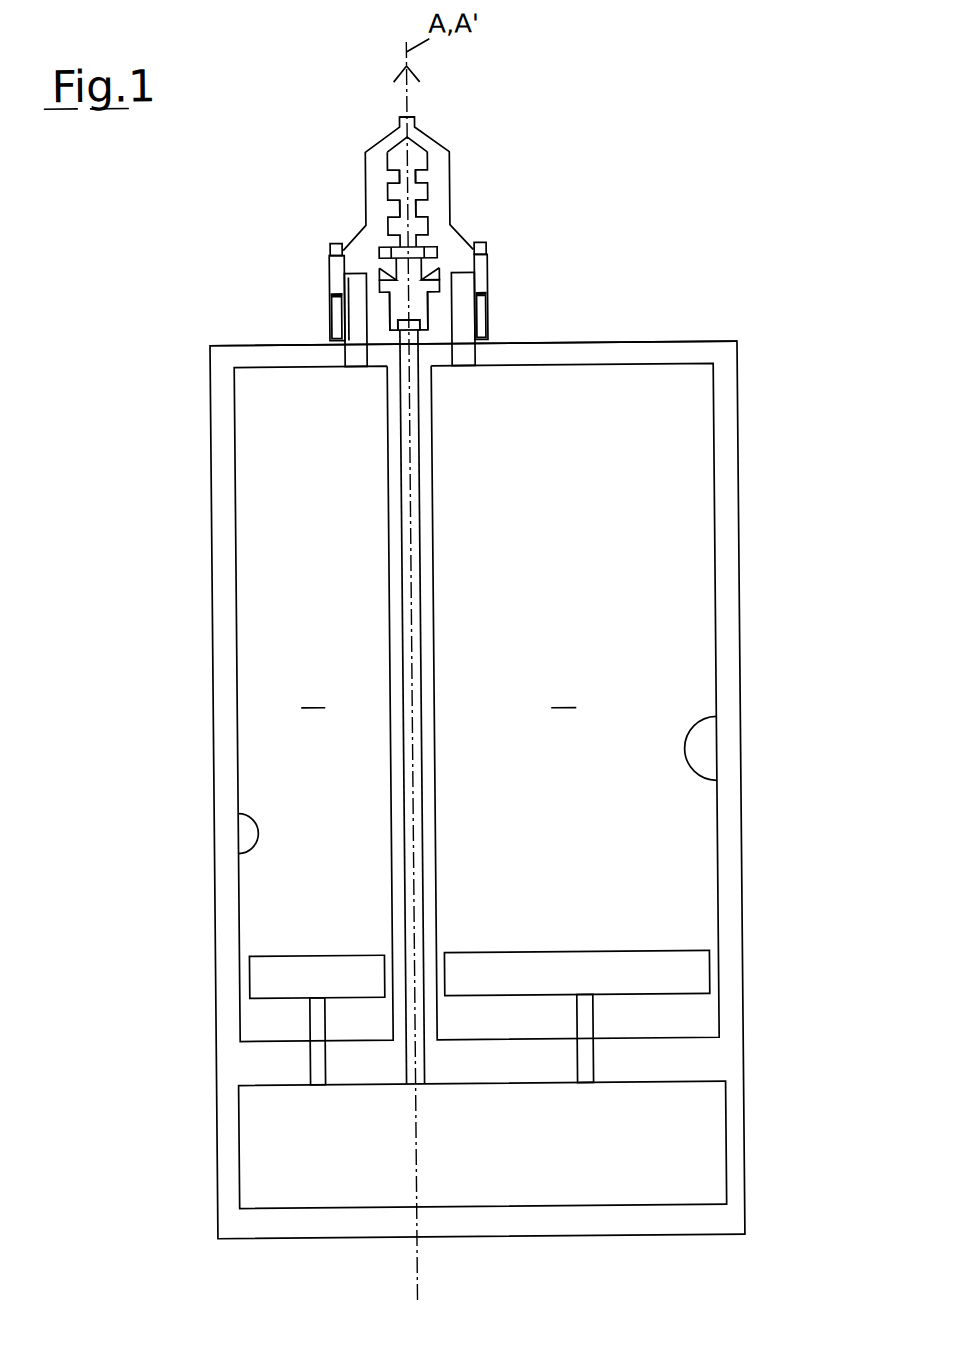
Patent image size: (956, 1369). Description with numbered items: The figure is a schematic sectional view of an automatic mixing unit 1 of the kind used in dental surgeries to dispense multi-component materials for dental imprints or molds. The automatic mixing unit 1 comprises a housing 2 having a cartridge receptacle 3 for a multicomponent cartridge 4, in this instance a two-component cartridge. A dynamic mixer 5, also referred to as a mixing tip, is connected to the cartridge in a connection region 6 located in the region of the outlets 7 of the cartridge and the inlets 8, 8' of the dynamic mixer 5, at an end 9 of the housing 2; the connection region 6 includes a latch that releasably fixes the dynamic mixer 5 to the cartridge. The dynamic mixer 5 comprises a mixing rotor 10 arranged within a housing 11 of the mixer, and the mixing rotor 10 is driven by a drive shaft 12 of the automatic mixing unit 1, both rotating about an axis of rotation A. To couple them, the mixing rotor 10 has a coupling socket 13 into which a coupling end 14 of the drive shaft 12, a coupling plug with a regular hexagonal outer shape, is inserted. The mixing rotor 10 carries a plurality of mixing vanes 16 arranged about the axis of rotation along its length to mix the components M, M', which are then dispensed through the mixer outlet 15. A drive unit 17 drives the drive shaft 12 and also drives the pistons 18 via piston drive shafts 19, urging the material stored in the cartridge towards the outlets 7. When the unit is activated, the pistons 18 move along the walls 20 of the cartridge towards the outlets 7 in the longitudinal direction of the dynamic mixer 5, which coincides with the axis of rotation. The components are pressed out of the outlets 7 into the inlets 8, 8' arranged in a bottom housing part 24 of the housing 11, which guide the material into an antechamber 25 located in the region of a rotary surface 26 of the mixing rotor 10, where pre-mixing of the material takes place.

The automatic mixing unit 1 is at (134, 765).
The housing 2 is at (752, 568).
The cartridge receptacle 3 is at (724, 471).
The multicomponent cartridge 4 is at (695, 425).
The dynamic mixer 5 is at (550, 122).
The connection region 6 is at (491, 246).
The outlets 7 is at (355, 356).
The inlets 8 is at (477, 294).
The inlet 8' is at (375, 289).
The end of the housing 9 is at (725, 342).
The mixing rotor 10 is at (402, 150).
The housing of the dynamic mixer 11 is at (366, 228).
The drive shaft 12 is at (393, 1075).
The coupling socket 13 is at (394, 305).
The coupling end 14 is at (403, 343).
The mixer outlet 15 is at (411, 118).
The mixing vanes 16 is at (421, 222).
The drive unit 17 is at (465, 1167).
The pistons 18 is at (588, 990).
The piston drive shafts 19 is at (309, 1059).
The walls of the two-component cartridge 20 is at (705, 717).
The bottom housing part 24 is at (430, 295).
The antechamber 25 is at (373, 272).
The rotary surface 26 is at (427, 253).